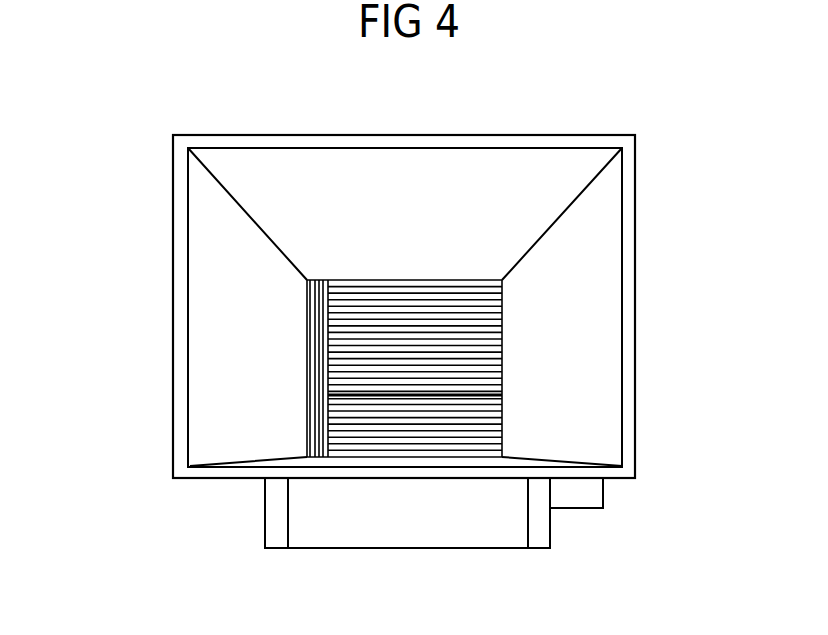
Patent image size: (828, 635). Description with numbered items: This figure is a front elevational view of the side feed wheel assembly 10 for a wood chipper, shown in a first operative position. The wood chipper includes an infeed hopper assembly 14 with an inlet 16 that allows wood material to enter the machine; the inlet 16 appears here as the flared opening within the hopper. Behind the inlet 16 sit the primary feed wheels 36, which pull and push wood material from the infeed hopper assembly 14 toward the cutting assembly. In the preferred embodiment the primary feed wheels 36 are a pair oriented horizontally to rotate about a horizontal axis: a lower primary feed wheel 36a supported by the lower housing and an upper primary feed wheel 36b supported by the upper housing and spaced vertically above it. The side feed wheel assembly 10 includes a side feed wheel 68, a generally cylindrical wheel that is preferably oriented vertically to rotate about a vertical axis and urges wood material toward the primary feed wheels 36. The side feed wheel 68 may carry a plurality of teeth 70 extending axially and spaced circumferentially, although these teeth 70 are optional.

The side feed wheel assembly 10 is at (145, 342).
The infeed hopper assembly 14 is at (635, 312).
The inlet 16 is at (622, 283).
The primary feed wheels 36 is at (503, 432).
The lower primary feed wheel 36a is at (442, 442).
The upper primary feed wheel 36b is at (458, 300).
The side feed wheel 68 is at (308, 316).
The teeth 70 is at (317, 431).